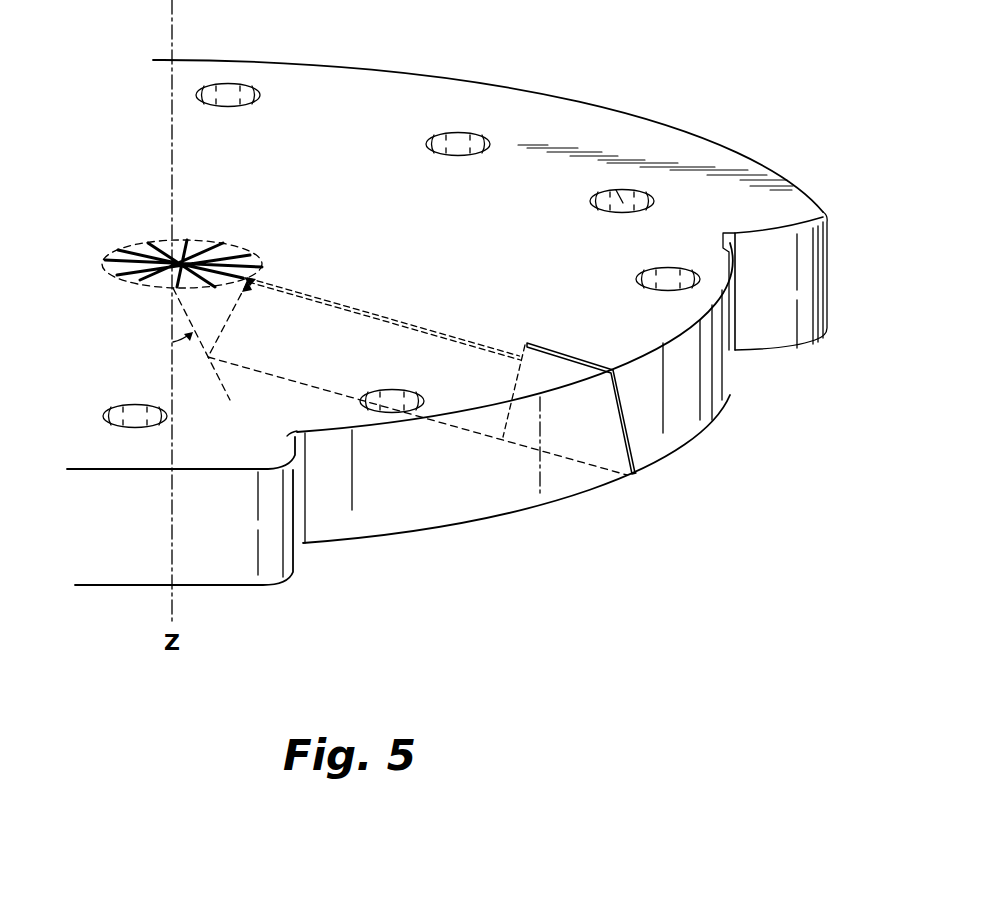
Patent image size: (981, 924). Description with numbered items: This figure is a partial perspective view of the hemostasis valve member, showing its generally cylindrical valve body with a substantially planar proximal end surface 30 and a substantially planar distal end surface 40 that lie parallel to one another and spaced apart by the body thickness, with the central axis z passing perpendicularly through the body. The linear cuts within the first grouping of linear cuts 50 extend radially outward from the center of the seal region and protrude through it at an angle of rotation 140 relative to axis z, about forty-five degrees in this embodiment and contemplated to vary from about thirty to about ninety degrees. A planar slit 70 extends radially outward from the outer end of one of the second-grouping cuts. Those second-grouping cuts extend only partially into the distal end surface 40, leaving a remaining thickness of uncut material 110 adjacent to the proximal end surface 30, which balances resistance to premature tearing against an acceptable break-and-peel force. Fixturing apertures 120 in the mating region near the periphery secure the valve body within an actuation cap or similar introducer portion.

The proximal end surface 30 is at (689, 134).
The distal end surface 40 is at (693, 445).
The first grouping of linear cuts 50 is at (218, 241).
The planar slits 70 is at (633, 431).
The remaining thickness of uncut material 110 is at (283, 300).
The fixturing apertures 120 is at (623, 203).
The angle of rotation 140 is at (188, 342).